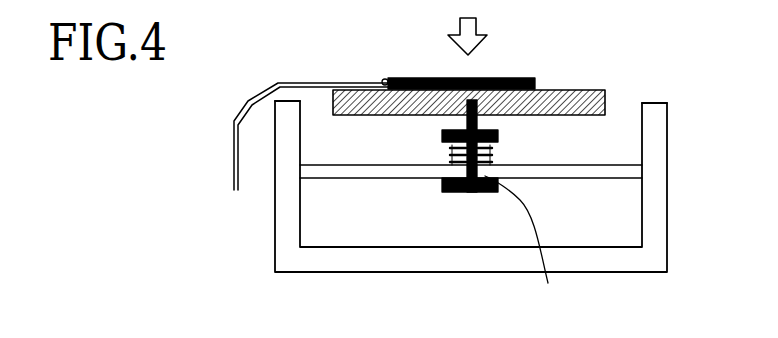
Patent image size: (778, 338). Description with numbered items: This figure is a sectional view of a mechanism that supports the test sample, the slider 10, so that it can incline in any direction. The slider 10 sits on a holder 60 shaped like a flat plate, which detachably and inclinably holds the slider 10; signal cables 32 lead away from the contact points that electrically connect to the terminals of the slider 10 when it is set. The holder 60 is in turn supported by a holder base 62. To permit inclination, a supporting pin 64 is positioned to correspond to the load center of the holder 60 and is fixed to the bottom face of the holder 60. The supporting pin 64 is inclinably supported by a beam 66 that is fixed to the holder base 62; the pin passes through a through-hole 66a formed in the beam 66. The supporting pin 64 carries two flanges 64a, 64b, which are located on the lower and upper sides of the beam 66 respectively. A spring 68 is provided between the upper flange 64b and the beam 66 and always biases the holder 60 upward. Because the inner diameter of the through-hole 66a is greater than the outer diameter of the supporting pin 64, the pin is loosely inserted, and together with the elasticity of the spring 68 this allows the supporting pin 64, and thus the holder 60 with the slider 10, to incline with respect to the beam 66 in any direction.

The slider 10 is at (407, 78).
The signal cables 32 is at (320, 82).
The holder 60 is at (553, 100).
The holder base 62 is at (660, 168).
The supporting pin 64 is at (472, 193).
The flange 64a is at (450, 193).
The flange 64b is at (492, 128).
The beam 66 is at (358, 168).
The through-hole 66a is at (535, 244).
The spring 68 is at (488, 160).